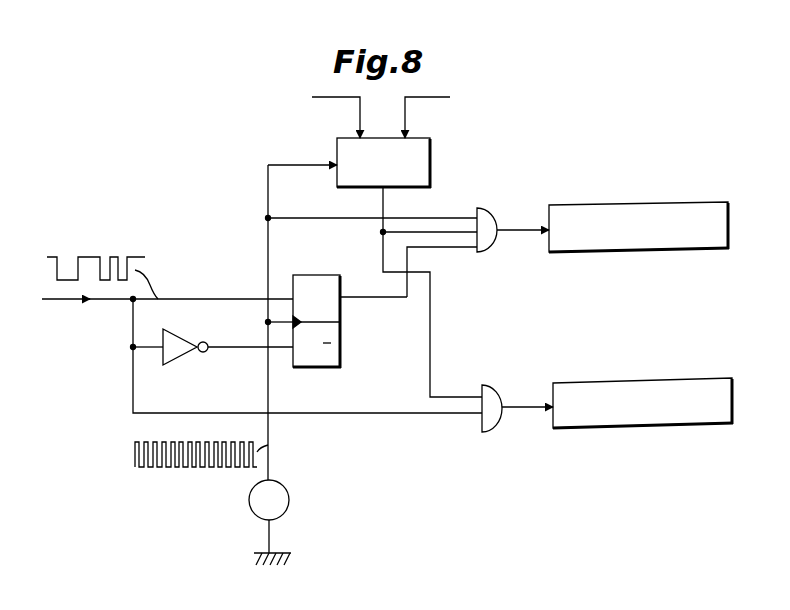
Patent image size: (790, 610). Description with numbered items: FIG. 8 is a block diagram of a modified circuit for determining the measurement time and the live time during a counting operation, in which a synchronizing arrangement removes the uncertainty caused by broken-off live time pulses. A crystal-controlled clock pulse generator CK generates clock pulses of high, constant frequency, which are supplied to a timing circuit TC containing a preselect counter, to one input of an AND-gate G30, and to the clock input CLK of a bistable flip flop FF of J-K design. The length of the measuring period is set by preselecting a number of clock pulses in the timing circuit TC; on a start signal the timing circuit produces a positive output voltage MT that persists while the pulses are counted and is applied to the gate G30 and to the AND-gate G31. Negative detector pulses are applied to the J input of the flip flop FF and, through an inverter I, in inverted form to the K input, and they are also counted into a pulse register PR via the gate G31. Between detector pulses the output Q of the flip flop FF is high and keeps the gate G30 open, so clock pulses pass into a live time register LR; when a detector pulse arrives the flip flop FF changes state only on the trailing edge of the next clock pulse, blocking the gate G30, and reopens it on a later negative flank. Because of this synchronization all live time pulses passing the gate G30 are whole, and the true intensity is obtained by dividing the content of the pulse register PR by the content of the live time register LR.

The timing circuit TC is at (367, 131).
The measuring time output voltage MT is at (383, 192).
The clock pulse generator CK is at (289, 497).
The AND-gate G30 is at (408, 246).
The live time register LR is at (639, 227).
The AND-gate G31 is at (343, 365).
The pulse register PR is at (643, 403).
The inverter I is at (212, 357).
The bistable flip flop FF is at (350, 321).
The clock input CLK is at (262, 324).